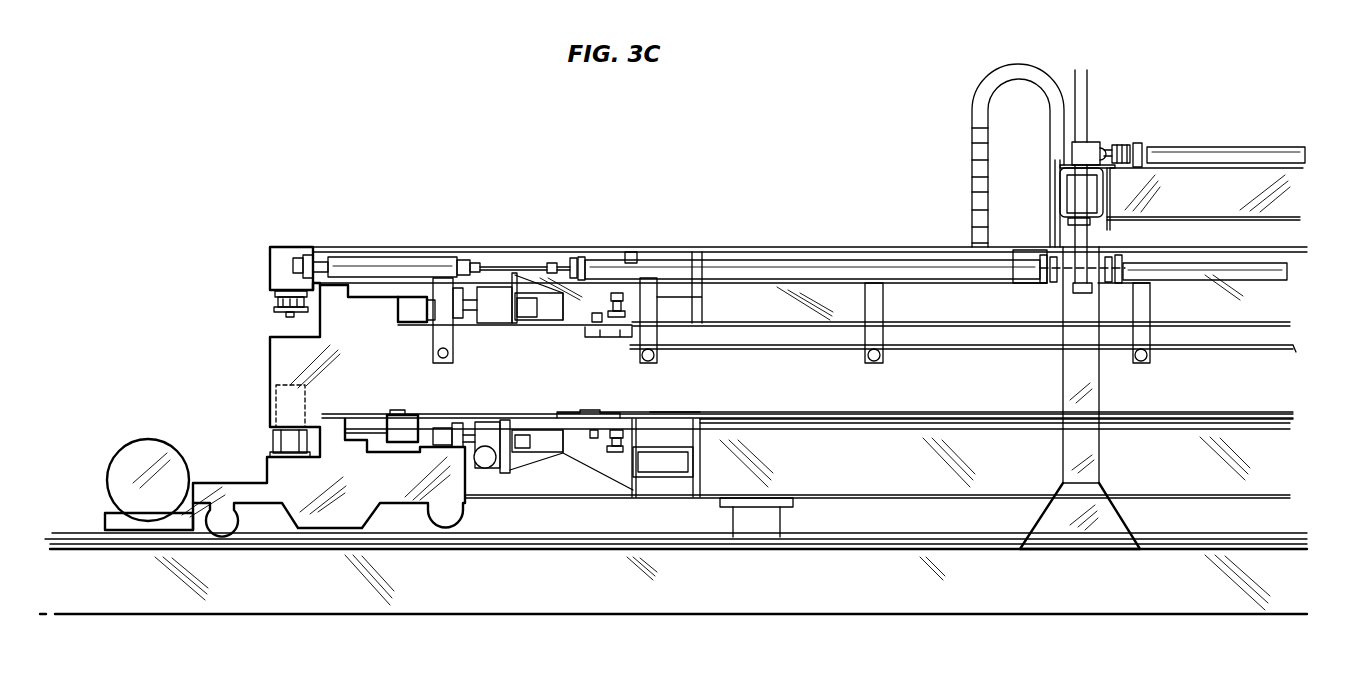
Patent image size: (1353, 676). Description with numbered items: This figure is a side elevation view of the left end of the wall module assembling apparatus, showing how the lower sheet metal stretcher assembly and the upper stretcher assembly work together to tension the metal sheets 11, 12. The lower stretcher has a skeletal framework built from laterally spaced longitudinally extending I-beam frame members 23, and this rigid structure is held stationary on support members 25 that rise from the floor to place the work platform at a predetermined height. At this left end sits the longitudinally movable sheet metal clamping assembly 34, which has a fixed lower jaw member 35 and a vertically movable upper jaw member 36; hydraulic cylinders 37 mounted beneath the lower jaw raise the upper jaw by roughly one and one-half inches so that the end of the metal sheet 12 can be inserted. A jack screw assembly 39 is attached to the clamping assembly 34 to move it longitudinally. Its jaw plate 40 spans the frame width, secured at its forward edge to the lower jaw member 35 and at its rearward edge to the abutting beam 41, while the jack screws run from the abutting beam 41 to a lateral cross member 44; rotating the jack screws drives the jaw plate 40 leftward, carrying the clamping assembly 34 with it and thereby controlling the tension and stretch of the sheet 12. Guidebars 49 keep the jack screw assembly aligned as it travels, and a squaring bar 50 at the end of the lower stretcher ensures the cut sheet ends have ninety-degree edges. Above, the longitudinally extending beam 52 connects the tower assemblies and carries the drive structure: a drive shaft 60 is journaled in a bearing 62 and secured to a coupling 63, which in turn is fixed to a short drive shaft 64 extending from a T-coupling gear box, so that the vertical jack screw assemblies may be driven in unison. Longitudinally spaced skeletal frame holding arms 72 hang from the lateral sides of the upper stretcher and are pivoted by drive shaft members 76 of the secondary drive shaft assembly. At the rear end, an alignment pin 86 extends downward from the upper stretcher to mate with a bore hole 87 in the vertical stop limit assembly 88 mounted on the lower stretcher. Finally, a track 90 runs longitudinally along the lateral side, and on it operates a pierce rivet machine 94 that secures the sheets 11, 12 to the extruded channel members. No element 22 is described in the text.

The metal sheet 11 is at (1197, 353).
The metal sheet 12 is at (1200, 420).
The upper frame member 22 is at (955, 318).
The I-beam frame member 23 is at (978, 486).
The support member 25 is at (780, 522).
The sheet metal clamping assembly 34 is at (642, 330).
The lower jaw member 35 is at (587, 327).
The upper jaw member 36 is at (600, 337).
The hydraulic cylinder 37 is at (610, 300).
The jack screw assembly 39 is at (495, 292).
The jaw plate 40 is at (425, 415).
The abutting beam 41 is at (410, 295).
The lateral cross member 44 is at (527, 322).
The guidebar 49 is at (1062, 190).
The squaring bar 50 is at (1097, 119).
The longitudinally extending beam 52 is at (1205, 206).
The drive shaft 60 is at (1256, 147).
The bearing 62 is at (1188, 140).
The coupling 63 is at (1130, 148).
The short drive shaft 64 is at (1097, 140).
The skeletal frame holding arm 72 is at (890, 300).
The drive shaft member 76 is at (797, 268).
The alignment pin 86 is at (283, 318).
The bore hole 87 is at (285, 378).
The vertical stop limit assembly 88 is at (275, 435).
The track 90 is at (1254, 533).
The pierce rivet machine 94 is at (218, 480).